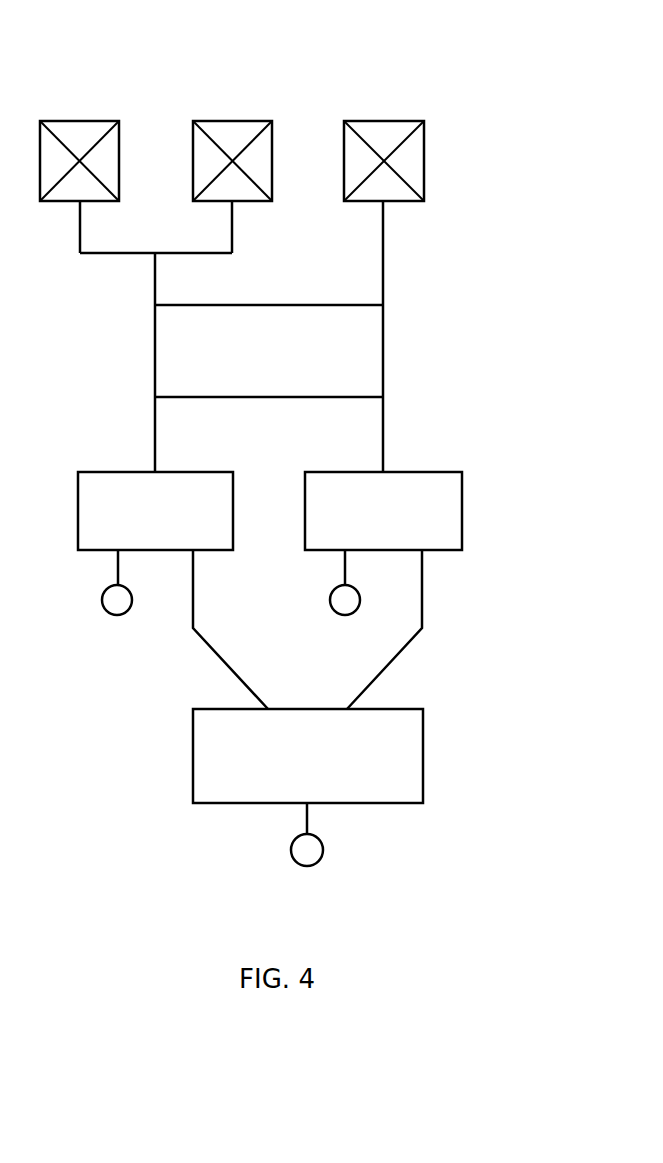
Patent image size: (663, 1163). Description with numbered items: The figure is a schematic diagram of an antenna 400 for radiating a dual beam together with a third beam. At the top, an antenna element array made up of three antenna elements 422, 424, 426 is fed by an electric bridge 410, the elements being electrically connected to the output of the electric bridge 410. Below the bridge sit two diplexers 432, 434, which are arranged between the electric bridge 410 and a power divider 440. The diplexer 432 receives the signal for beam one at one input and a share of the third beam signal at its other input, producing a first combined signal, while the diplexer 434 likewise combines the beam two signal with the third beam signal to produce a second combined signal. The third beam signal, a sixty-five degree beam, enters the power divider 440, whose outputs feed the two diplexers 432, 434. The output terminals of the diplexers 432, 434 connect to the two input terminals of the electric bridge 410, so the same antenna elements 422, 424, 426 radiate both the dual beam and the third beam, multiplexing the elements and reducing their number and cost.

The antenna 400 is at (326, 81).
The electric bridge 410 is at (205, 355).
The antenna element 422 is at (73, 187).
The antenna element 424 is at (232, 188).
The antenna element 426 is at (392, 188).
The diplexer 432 is at (189, 528).
The diplexer 434 is at (416, 528).
The power divider 440 is at (392, 765).